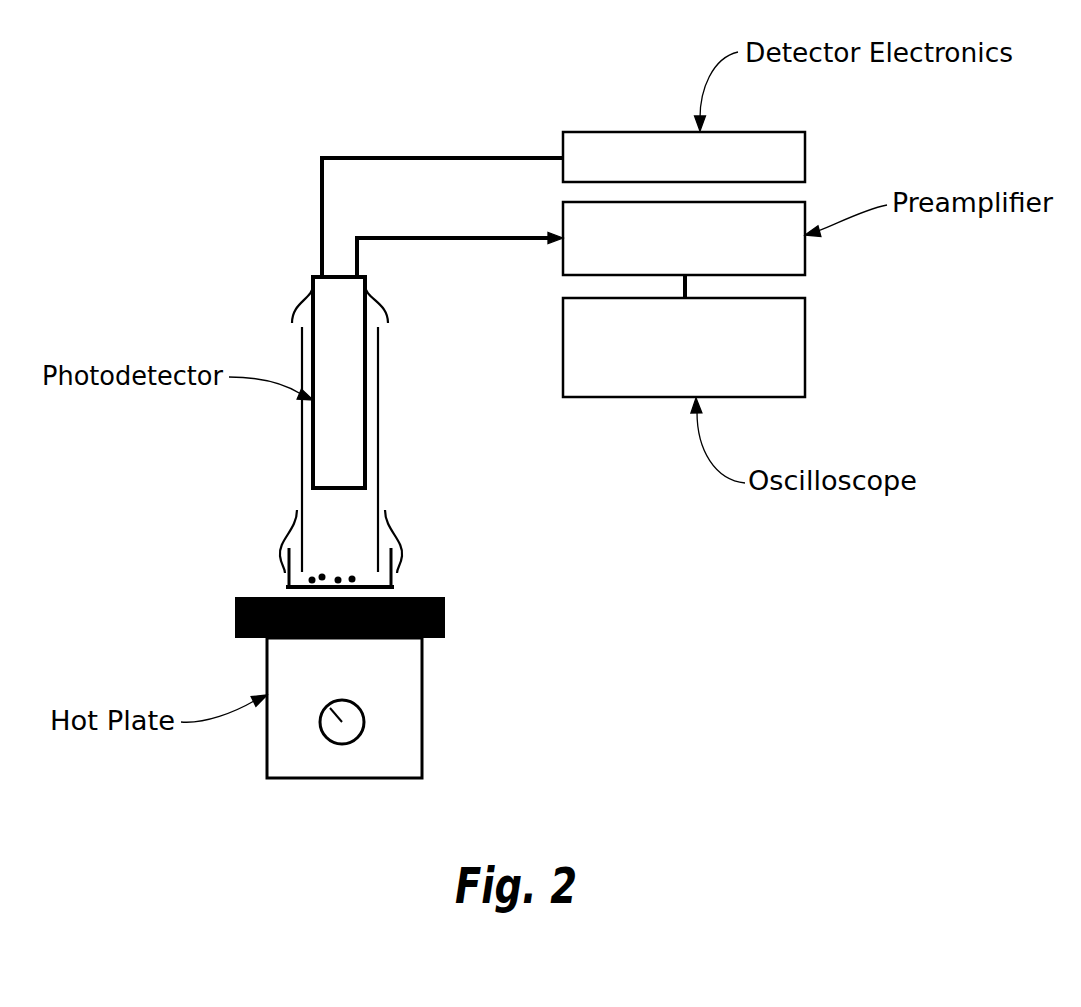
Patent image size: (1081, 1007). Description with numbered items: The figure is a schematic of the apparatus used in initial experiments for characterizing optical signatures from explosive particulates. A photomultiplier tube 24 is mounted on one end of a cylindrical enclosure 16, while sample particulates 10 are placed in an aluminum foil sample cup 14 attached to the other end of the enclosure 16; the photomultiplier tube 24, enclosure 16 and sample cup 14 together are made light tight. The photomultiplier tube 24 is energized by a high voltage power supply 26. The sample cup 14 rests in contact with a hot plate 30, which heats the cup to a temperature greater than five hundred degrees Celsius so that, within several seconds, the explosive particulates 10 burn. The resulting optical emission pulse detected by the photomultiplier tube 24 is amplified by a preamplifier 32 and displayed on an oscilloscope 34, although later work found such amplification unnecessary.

The sample particulates 10 is at (331, 577).
The sample cup 14 is at (275, 585).
The cylindrical enclosure 16 is at (396, 425).
The photomultiplier tube 24 is at (323, 377).
The high voltage power supply 26 is at (670, 171).
The hot plate 30 is at (436, 714).
The preamplifier 32 is at (670, 251).
The oscilloscope 34 is at (670, 357).